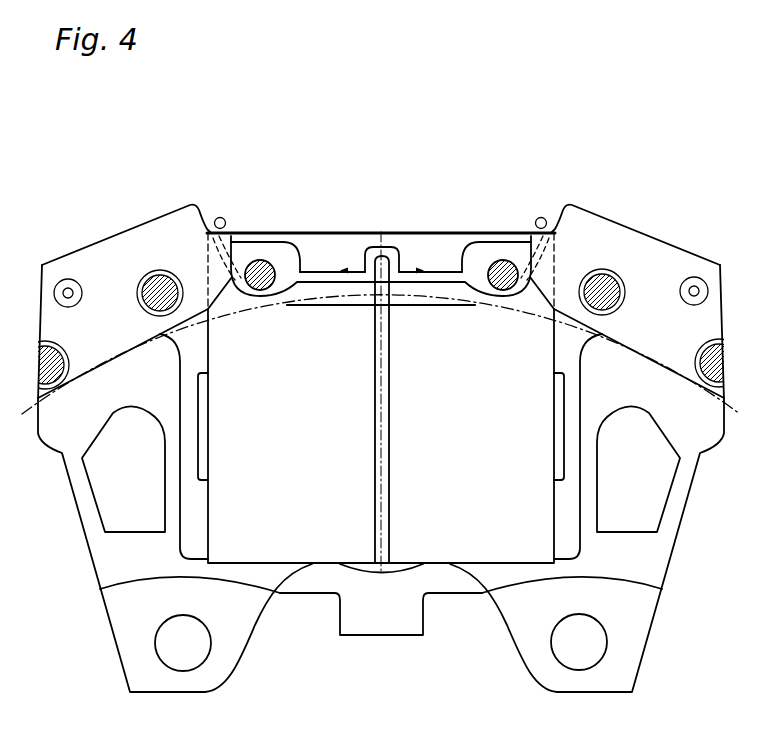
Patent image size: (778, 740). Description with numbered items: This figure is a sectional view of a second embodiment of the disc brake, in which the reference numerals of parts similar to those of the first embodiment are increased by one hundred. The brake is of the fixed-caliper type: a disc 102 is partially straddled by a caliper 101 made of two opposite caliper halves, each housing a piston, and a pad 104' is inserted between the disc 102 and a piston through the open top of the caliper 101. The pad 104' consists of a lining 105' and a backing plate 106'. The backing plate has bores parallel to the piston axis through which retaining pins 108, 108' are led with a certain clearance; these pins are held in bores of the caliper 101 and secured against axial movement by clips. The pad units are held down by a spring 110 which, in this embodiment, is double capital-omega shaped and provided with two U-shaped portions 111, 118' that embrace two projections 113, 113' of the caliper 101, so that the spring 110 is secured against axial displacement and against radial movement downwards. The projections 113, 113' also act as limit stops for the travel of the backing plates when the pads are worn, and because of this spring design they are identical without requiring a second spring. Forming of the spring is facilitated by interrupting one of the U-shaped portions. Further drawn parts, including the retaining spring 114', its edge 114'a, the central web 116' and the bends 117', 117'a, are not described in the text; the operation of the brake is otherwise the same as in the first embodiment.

The caliper 101 is at (137, 243).
The disc 102 is at (635, 355).
The pad 104' is at (376, 599).
The lining 105' is at (381, 434).
The backing plate 106' is at (477, 209).
The retaining pin 108 is at (246, 309).
The retaining pin 108' is at (487, 228).
The spring 110 is at (329, 285).
The U-shaped portion 111 is at (220, 217).
The projection 113 is at (248, 226).
The projection 113' is at (525, 223).
The retaining spring 114' is at (381, 236).
The spring lower edge 114'a is at (415, 322).
The central web 116' is at (361, 422).
The spring bend 117' is at (373, 219).
The inner spring bend 117'a is at (401, 229).
The U-shaped portion 118' is at (565, 195).